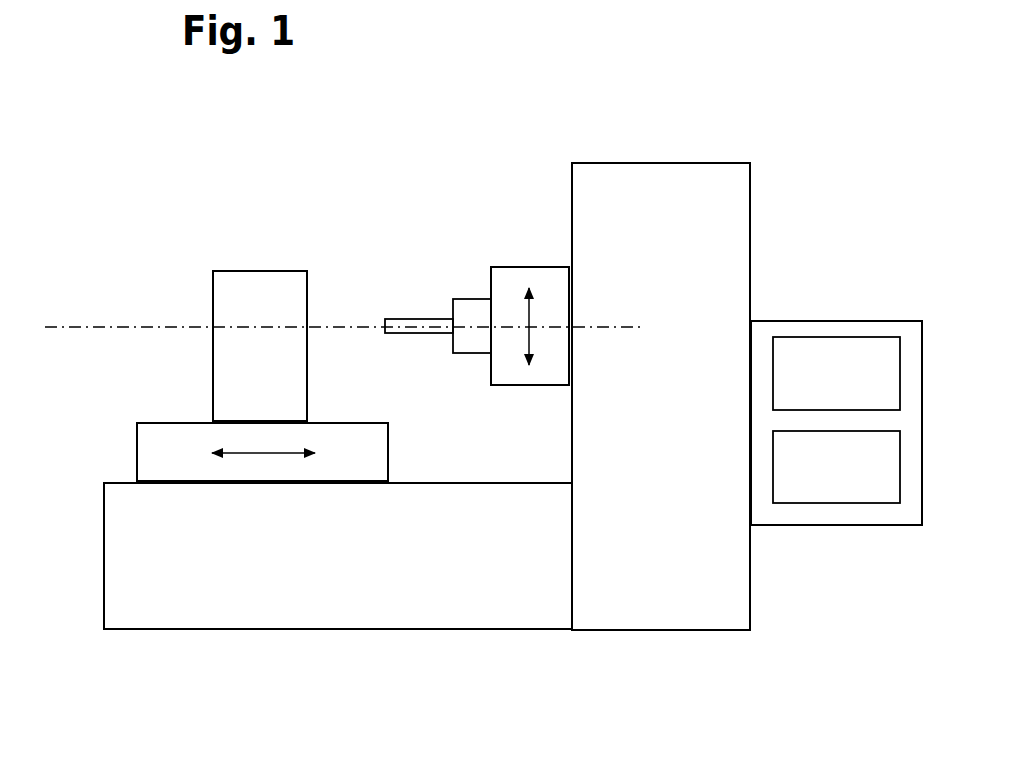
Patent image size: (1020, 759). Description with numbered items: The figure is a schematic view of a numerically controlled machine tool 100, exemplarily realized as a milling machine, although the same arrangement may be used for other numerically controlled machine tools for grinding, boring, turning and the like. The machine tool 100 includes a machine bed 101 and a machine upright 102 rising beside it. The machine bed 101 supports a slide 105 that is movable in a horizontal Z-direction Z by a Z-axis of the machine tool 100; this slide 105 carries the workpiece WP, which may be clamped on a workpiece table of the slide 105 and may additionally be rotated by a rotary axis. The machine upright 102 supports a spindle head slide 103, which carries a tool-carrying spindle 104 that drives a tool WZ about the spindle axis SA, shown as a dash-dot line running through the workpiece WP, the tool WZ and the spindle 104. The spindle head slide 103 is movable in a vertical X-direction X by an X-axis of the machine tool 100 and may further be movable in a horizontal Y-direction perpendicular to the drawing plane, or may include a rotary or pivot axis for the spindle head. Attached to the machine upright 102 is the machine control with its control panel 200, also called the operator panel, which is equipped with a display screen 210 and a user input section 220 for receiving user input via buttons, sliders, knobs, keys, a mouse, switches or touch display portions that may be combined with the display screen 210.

The numerically controlled machine tool 100 is at (674, 137).
The machine bed 101 is at (338, 632).
The machine upright 102 is at (750, 203).
The spindle head slide 103 is at (523, 267).
The tool-carrying spindle 104 is at (467, 299).
The slide 105 is at (137, 452).
The control panel 200 is at (836, 467).
The display screen 210 is at (836, 373).
The user input section 220 is at (836, 467).
The spindle axis SA is at (82, 327).
The workpiece WP is at (213, 288).
The tool WZ is at (403, 319).
The X-direction X is at (535, 342).
The Z-direction Z is at (263, 457).